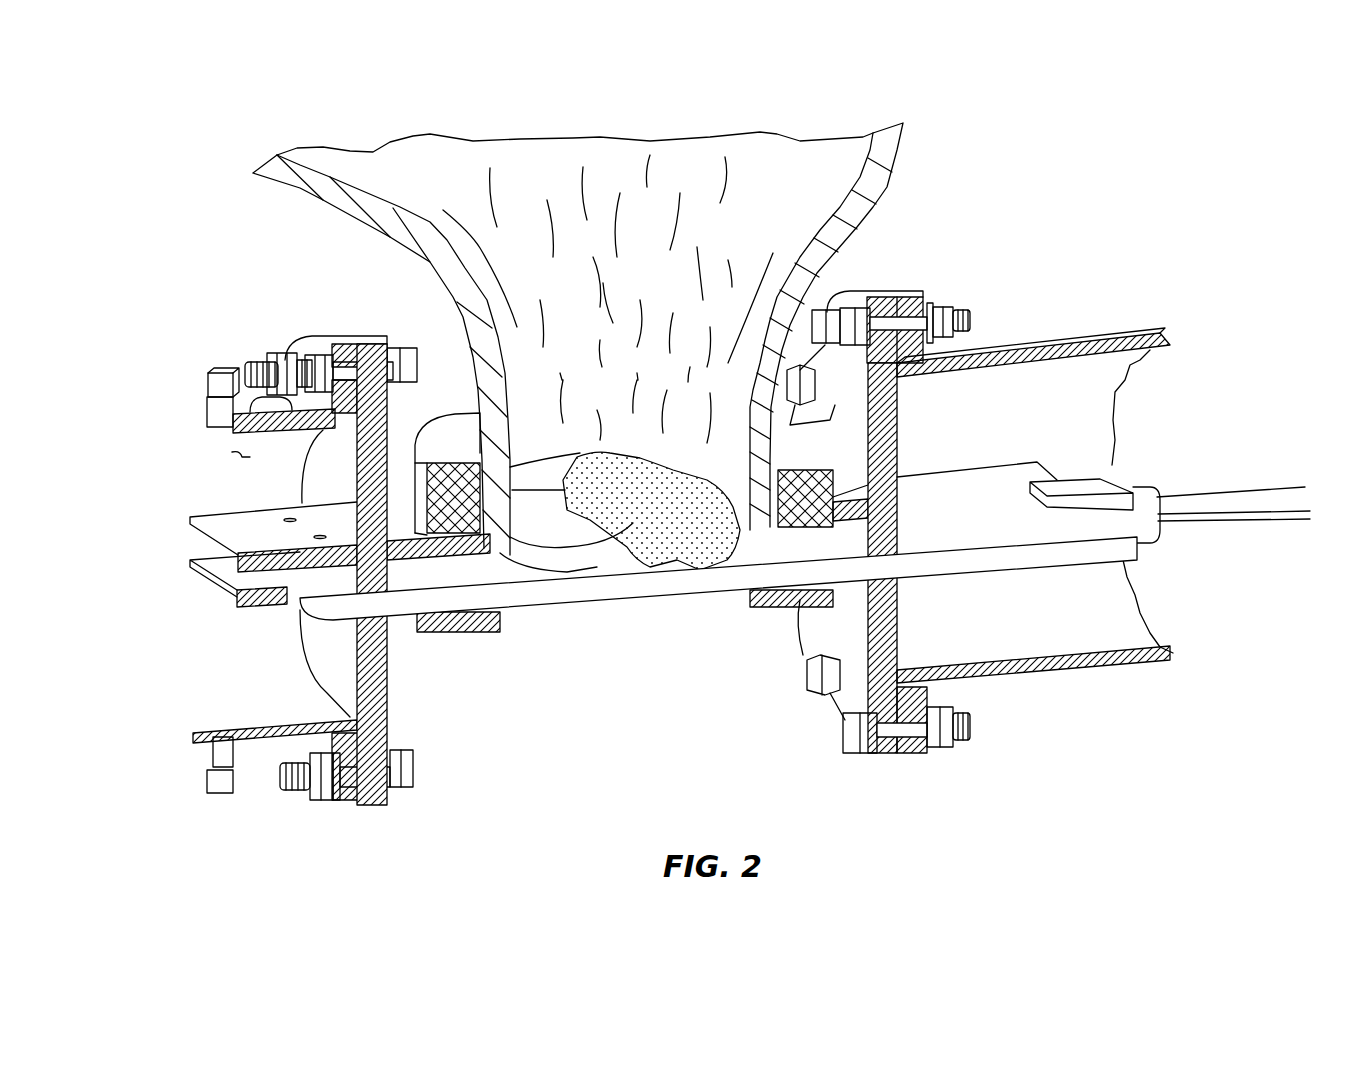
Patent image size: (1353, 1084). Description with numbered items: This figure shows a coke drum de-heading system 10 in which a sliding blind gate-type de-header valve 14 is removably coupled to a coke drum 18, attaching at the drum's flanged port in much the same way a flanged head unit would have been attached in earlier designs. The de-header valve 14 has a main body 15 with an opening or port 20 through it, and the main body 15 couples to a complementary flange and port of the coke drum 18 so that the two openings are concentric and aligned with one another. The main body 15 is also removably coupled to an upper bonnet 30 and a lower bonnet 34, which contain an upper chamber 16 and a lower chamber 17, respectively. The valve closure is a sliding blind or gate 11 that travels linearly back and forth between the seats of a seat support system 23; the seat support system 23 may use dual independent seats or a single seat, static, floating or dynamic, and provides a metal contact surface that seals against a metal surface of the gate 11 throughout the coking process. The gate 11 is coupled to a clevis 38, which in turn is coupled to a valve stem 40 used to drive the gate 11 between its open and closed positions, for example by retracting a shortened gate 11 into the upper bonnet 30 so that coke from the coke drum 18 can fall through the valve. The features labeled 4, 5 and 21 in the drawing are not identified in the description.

The funnel 4 is at (767, 210).
The coke drum 18 is at (860, 195).
The coke drum de-heading system 10 is at (1160, 236).
The upper bonnet 30 is at (1000, 348).
The upper chamber 16 is at (1095, 385).
The clevis 38 is at (1093, 483).
The valve stem 40 is at (1250, 500).
The lower chamber 17 is at (1120, 625).
The sliding blind gate-type de-header valve 14 is at (1003, 748).
The lower bonnet 34 is at (203, 417).
The seat support system 23 is at (523, 566).
The material 5 is at (678, 556).
The opening 21 is at (590, 580).
The gate 11 is at (693, 597).
The opening or port 20 is at (541, 626).
The main body 15 is at (390, 710).